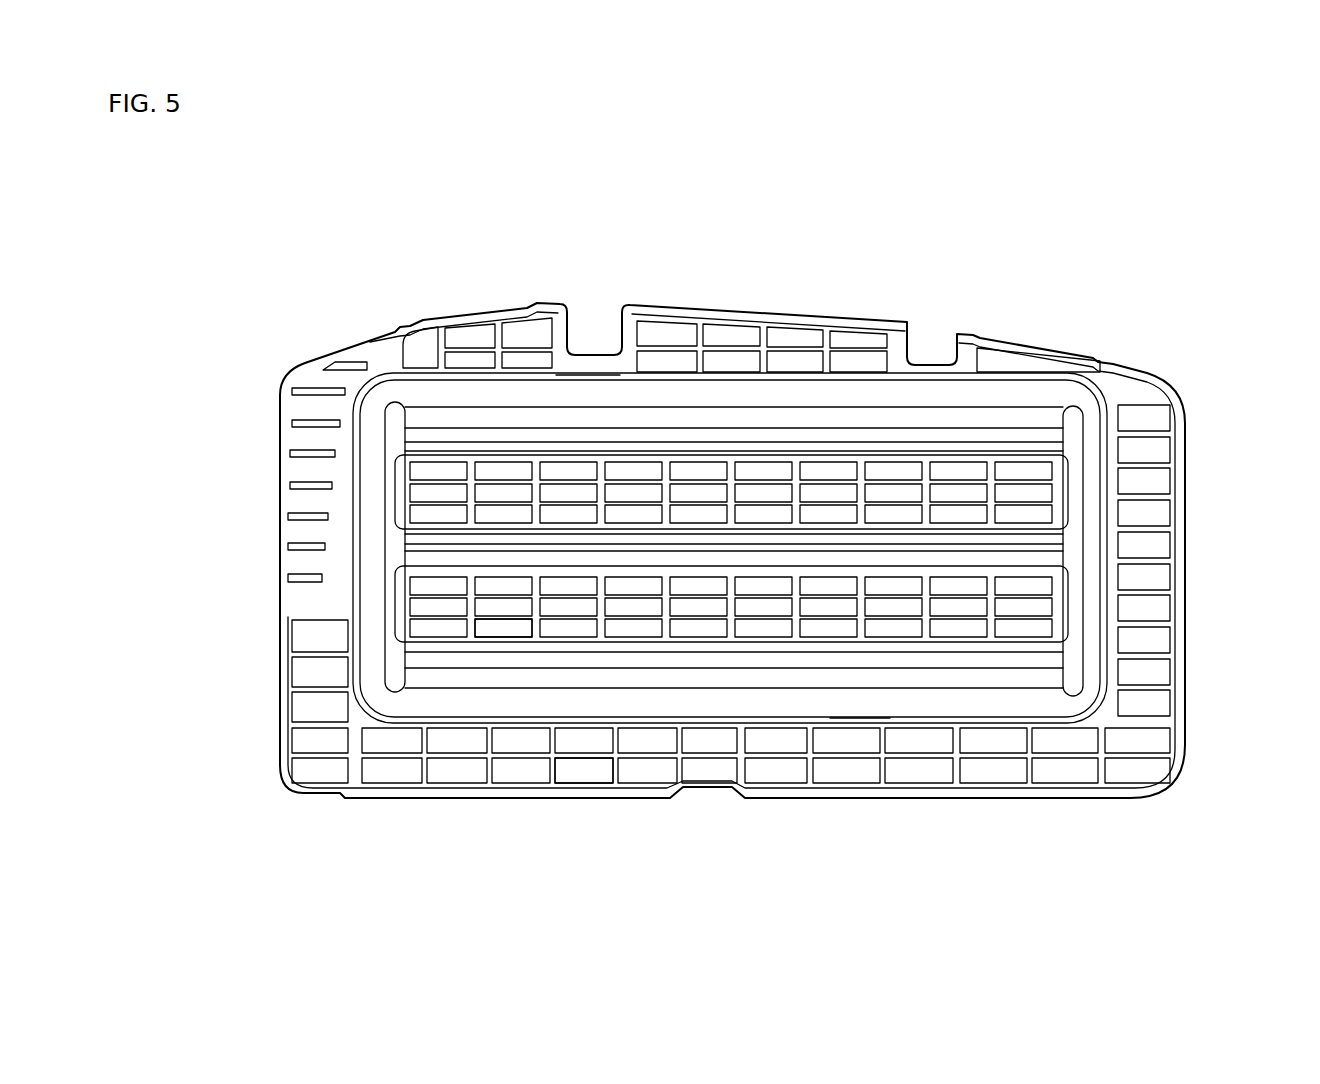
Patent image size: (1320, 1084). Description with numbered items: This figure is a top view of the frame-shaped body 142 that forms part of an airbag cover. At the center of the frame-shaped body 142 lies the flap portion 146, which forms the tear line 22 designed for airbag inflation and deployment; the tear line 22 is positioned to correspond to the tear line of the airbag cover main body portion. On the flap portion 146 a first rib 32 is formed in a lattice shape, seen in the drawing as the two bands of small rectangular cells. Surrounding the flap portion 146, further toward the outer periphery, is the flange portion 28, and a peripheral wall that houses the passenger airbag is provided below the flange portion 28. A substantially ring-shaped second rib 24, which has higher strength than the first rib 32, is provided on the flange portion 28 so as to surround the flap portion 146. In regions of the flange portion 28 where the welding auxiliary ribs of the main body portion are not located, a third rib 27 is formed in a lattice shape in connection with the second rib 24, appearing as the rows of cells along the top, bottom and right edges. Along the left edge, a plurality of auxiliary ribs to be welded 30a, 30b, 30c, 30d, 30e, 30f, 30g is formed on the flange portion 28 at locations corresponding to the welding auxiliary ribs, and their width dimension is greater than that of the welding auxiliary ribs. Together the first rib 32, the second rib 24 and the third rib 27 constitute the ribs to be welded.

The frame-shaped body 142 is at (1207, 337).
The tear line 22 is at (1118, 539).
The second rib 24 is at (586, 378).
The third rib 27 is at (720, 345).
The flange portion 28 is at (572, 772).
The first rib 32 is at (500, 616).
The flap portion 146 is at (765, 472).
The auxiliary rib to be welded 30a is at (340, 387).
The auxiliary rib to be welded 30b is at (292, 422).
The auxiliary rib to be welded 30c is at (292, 452).
The auxiliary rib to be welded 30d is at (290, 483).
The auxiliary rib to be welded 30e is at (290, 515).
The auxiliary rib to be welded 30f is at (288, 547).
The auxiliary rib to be welded 30g is at (288, 580).